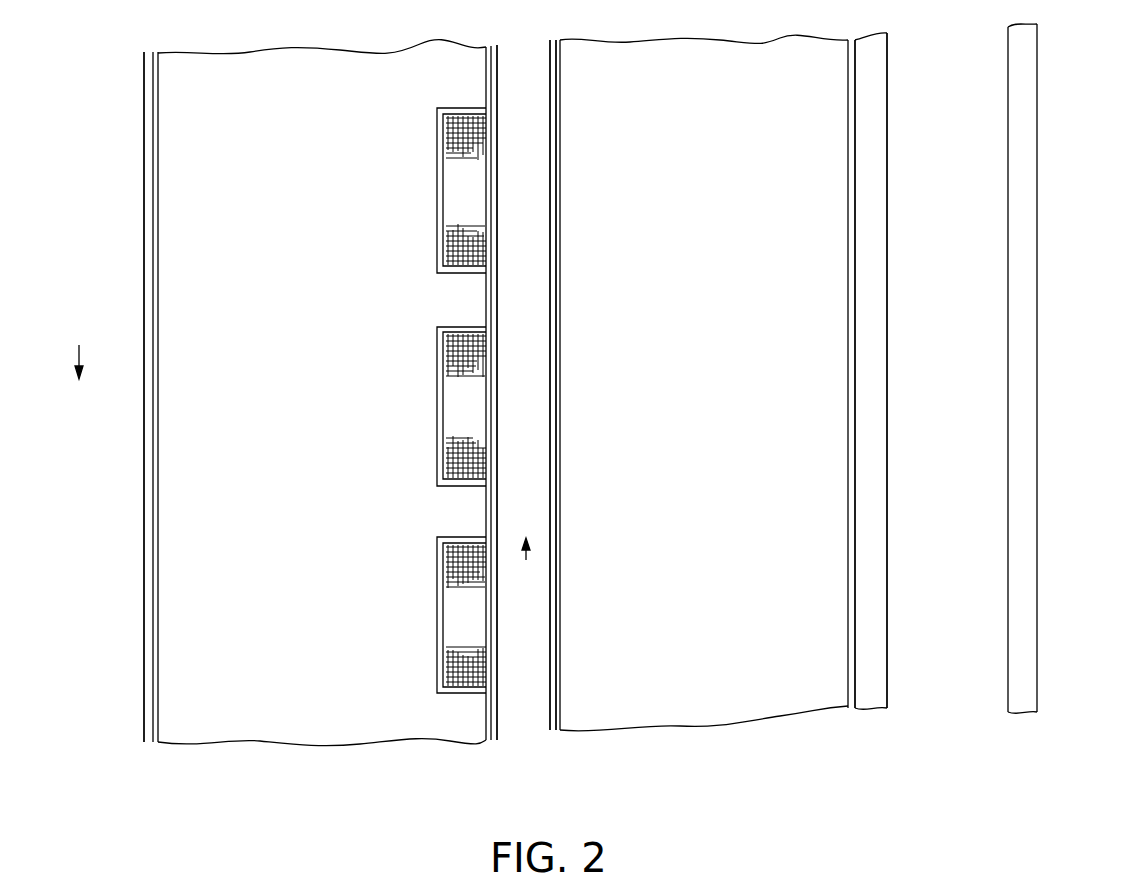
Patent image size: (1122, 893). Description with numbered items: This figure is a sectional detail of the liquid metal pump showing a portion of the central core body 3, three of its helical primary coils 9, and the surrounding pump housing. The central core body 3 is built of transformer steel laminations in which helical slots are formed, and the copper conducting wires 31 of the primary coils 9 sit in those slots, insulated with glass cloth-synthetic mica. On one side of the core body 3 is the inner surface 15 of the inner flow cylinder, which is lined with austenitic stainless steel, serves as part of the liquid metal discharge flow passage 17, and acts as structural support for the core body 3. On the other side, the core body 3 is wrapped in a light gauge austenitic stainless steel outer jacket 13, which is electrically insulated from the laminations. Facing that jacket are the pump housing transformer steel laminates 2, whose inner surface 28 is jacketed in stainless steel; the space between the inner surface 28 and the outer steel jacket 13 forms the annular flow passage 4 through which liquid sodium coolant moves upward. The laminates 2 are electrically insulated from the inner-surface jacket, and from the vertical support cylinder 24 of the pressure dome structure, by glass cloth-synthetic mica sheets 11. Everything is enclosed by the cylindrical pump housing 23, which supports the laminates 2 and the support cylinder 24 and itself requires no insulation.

The pump housing transformer steel laminates 2 is at (709, 393).
The central core body 3 is at (312, 393).
The annular flow passage 4 is at (533, 610).
The primary coils 9 is at (472, 212).
The glass cloth-synthetic mica sheet 11 is at (159, 700).
The outer steel jacket 13 is at (498, 729).
The inner surface 15 is at (143, 716).
The liquid metal discharge flow passage 17 is at (92, 336).
The cylindrical pump housing 23 is at (1033, 465).
The vertical support cylinder 24 is at (878, 688).
The inner surface 28 is at (551, 719).
The copper conducting wires 31 is at (450, 672).